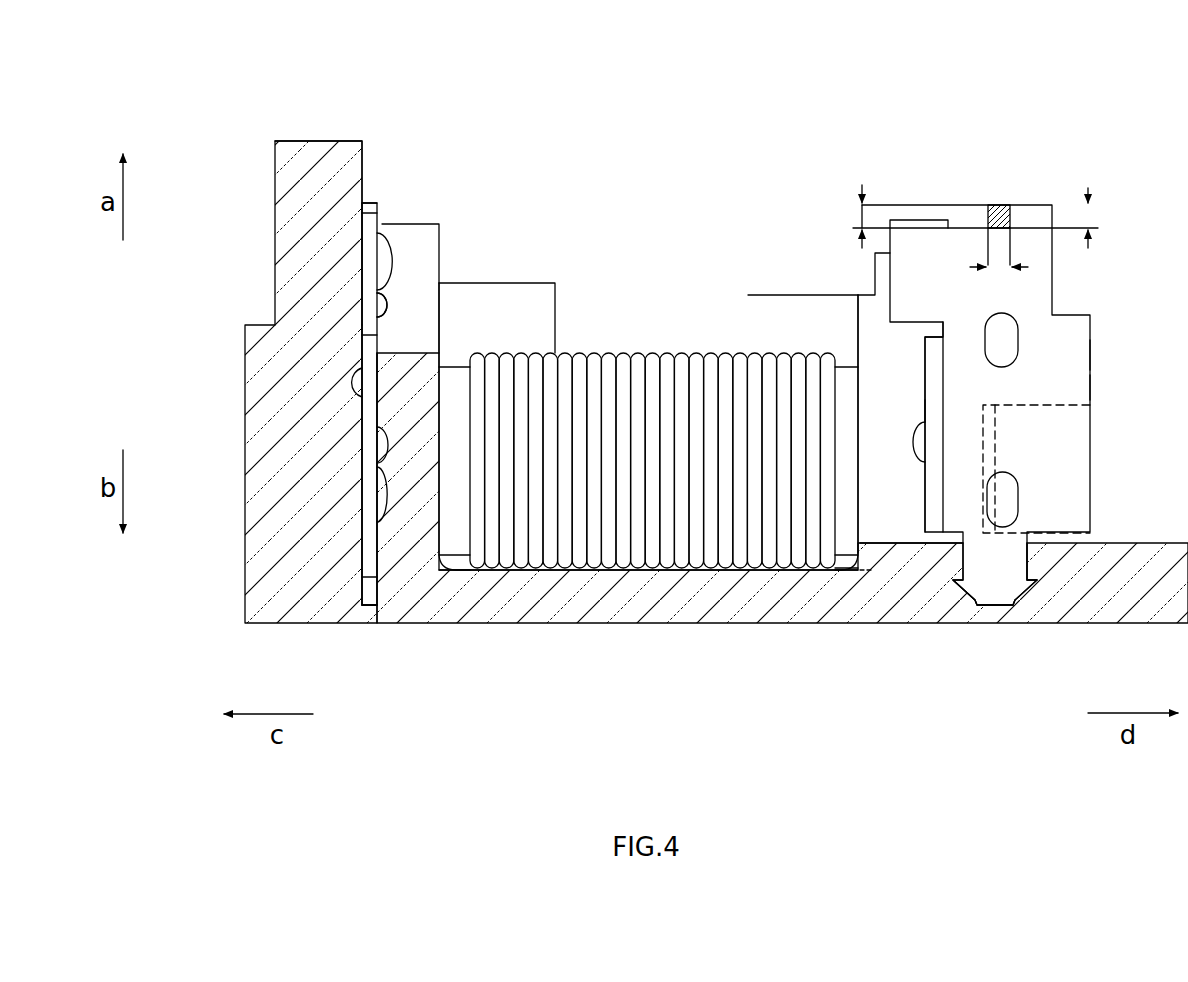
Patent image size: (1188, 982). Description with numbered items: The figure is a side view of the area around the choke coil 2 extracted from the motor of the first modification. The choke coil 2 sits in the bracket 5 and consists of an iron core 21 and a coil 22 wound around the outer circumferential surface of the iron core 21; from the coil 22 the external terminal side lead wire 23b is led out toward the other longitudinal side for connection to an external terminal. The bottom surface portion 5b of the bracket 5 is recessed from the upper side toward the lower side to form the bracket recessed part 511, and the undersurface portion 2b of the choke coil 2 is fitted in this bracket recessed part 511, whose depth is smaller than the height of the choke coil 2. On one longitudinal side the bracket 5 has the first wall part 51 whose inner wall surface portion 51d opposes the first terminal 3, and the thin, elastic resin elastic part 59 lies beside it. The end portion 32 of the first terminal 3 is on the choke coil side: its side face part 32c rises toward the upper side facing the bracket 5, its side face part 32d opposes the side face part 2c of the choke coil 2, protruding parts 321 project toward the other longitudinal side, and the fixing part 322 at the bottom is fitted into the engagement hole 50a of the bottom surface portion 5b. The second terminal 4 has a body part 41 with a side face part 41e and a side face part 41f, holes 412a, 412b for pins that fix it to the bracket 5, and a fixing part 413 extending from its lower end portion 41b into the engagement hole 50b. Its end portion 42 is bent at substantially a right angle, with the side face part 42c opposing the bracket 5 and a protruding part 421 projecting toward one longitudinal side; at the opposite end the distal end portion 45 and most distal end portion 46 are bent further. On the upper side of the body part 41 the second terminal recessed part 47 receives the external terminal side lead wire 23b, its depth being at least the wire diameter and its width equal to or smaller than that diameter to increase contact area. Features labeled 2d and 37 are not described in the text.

The choke coil 2 is at (648, 409).
The undersurface portion 2b is at (672, 572).
The side face part 2c is at (420, 513).
The side surface of bobbin flange 2d is at (863, 423).
The iron core 21 is at (458, 390).
The coil 22 is at (580, 350).
The first terminal 3 is at (345, 345).
The end portion 32 is at (369, 192).
The side face part 32c is at (360, 327).
The side face part 32d is at (383, 296).
The protruding parts 321 is at (393, 260).
The fixing part 322 is at (367, 588).
The upper end of plate portion 37 is at (367, 212).
The elastic part 59 is at (442, 247).
The second terminal 4 is at (1006, 403).
The body part 41 is at (1080, 330).
The lower end portion 41b is at (1073, 537).
The side face part 41e is at (1080, 357).
The side face part 41f is at (1080, 385).
The hole 412a is at (1020, 490).
The hole 412b is at (1013, 327).
The fixing part 413 is at (980, 582).
The end portion 42 is at (933, 377).
The side face part 42c is at (925, 422).
The protruding part 421 is at (915, 450).
The distal end portion 45 is at (1022, 462).
The most distal end portion 46 is at (995, 430).
The second terminal recessed part 47 is at (997, 203).
The external terminal side lead wire 23b is at (1008, 203).
The bracket 5 is at (290, 135).
The bottom surface portion 5b is at (920, 543).
The engagement hole 50a is at (383, 600).
The engagement hole 50b is at (1022, 601).
The first wall part 51 is at (290, 190).
The inner wall surface portion 51d is at (350, 395).
The bracket recessed part 511 is at (835, 572).